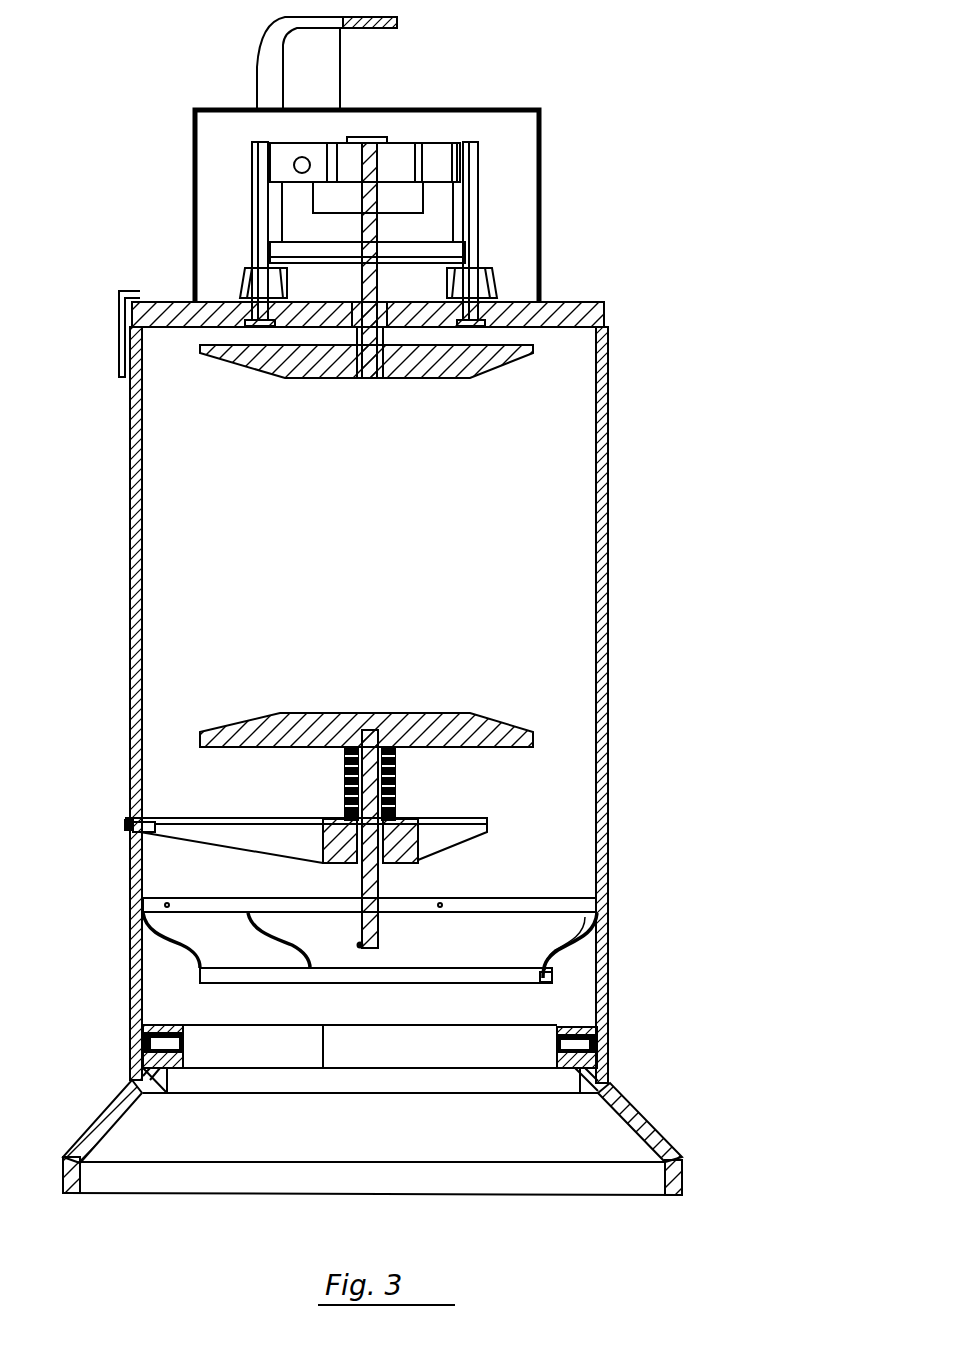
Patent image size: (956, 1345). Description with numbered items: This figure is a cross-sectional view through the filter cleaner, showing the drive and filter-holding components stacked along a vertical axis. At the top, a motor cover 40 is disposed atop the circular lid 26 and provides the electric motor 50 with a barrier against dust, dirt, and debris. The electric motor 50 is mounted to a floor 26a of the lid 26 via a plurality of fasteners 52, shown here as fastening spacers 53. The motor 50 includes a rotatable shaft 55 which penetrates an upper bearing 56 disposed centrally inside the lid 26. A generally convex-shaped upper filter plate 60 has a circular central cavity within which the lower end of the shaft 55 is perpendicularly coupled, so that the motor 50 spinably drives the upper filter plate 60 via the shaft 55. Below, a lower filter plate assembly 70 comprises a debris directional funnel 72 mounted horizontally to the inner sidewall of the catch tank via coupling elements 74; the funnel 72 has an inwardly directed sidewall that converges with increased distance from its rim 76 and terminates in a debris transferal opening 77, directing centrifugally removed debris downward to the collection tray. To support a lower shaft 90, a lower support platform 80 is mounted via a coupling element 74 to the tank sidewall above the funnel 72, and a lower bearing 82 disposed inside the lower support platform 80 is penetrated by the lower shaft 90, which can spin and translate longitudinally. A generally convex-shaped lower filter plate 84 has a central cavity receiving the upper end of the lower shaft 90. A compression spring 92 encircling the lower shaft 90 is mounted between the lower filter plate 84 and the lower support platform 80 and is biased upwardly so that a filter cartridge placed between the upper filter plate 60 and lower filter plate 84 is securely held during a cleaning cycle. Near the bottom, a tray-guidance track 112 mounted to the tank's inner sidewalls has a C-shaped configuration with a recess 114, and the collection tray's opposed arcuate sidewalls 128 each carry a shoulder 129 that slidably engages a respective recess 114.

The circular lid 26 is at (605, 303).
The floor 26a is at (558, 302).
The motor cover 40 is at (481, 108).
The electric motor 50 is at (277, 147).
The fasteners 52 is at (475, 263).
The fastening spacers 53 is at (495, 283).
The rotatable shaft 55 is at (352, 298).
The upper bearing 56 is at (352, 298).
The upper filter plate 60 is at (480, 370).
The lower filter plate assembly 70 is at (575, 789).
The debris directional funnel 72 is at (573, 947).
The coupling elements 74 is at (127, 823).
The rim 76 is at (607, 893).
The debris transferal opening 77 is at (528, 983).
The lower support platform 80 is at (173, 817).
The lower bearing 82 is at (407, 815).
The lower filter plate 84 is at (320, 713).
The lower shaft 90 is at (395, 905).
The compression spring 92 is at (397, 768).
The tray-guidance track 112 is at (160, 1023).
The recess 114 is at (608, 1077).
The arcuate sidewalls 128 is at (140, 1080).
The shoulder 129 is at (145, 1043).